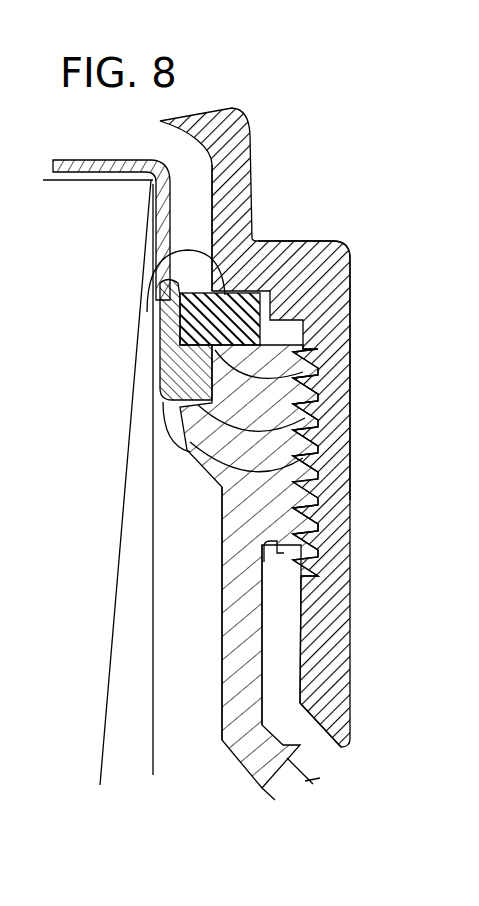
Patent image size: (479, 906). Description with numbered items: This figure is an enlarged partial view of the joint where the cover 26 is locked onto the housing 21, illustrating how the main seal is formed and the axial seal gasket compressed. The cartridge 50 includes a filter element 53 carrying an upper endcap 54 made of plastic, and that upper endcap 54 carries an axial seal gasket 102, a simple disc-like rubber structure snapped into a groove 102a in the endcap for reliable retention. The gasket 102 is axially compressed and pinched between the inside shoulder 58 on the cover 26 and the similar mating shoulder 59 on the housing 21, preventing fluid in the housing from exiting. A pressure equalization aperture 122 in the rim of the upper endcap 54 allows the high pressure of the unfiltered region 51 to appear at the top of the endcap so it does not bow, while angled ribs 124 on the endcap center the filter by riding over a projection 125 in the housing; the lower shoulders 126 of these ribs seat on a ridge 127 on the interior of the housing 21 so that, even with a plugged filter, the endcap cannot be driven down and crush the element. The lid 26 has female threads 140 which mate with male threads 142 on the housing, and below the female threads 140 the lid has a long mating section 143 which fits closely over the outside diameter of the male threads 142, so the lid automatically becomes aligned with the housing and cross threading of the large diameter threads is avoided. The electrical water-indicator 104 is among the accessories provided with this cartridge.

The housing 21 is at (280, 765).
The cover 26 is at (238, 122).
The cartridge 50 is at (165, 572).
The unfiltered region 51 is at (190, 645).
The filter element 53 is at (120, 682).
The upper endcap 54 is at (128, 163).
The inside shoulder 58 is at (350, 266).
The mating shoulder 59 is at (300, 358).
The axial seal gasket 102 is at (330, 302).
The groove 102a is at (262, 240).
The electrical water-indicator 104 is at (300, 358).
The pressure equalization aperture 122 is at (170, 221).
The ribs 124 is at (335, 396).
The projection 125 is at (305, 379).
The lower shoulders 126 is at (335, 453).
The ridge 127 is at (333, 426).
The female threads 140 is at (307, 510).
The male threads 142 is at (280, 531).
The mating section 143 is at (355, 698).